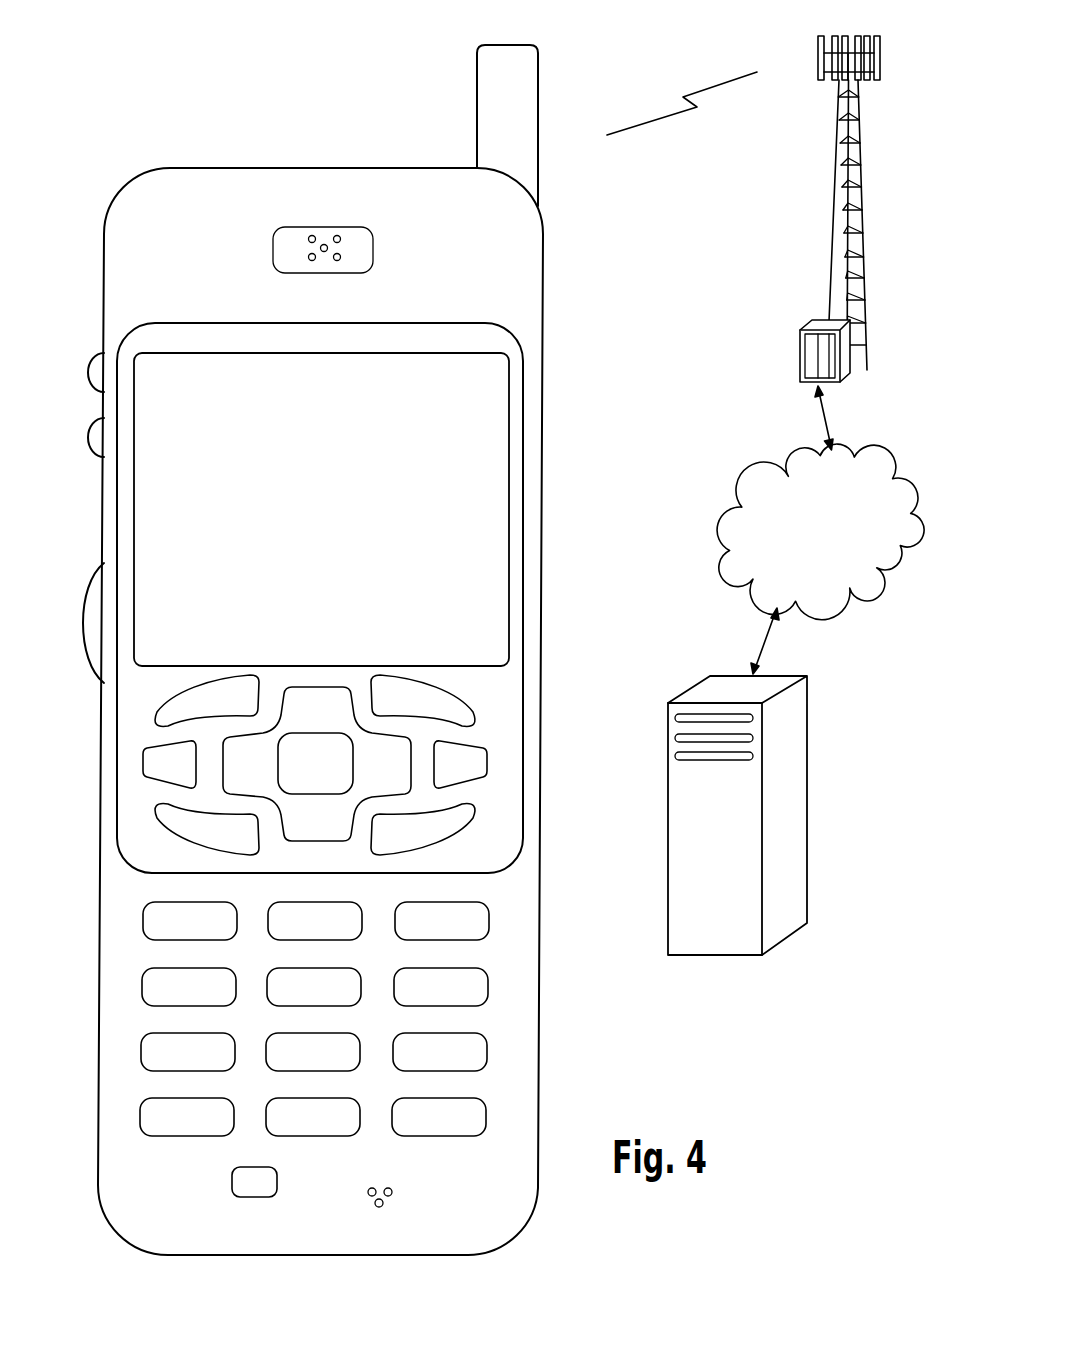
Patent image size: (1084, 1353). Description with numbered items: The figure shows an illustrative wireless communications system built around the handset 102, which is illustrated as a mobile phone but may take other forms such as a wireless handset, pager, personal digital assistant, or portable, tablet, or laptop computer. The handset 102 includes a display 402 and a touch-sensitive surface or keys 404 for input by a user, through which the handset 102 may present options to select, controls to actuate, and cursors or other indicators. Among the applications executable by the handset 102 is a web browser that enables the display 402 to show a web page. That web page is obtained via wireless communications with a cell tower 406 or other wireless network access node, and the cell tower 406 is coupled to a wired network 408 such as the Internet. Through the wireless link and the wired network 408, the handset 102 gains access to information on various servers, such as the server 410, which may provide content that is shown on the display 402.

The handset 102 is at (150, 1252).
The display 402 is at (512, 368).
The keys 404 is at (551, 677).
The cell tower 406 is at (830, 223).
The wired network 408 is at (737, 586).
The server 410 is at (711, 956).